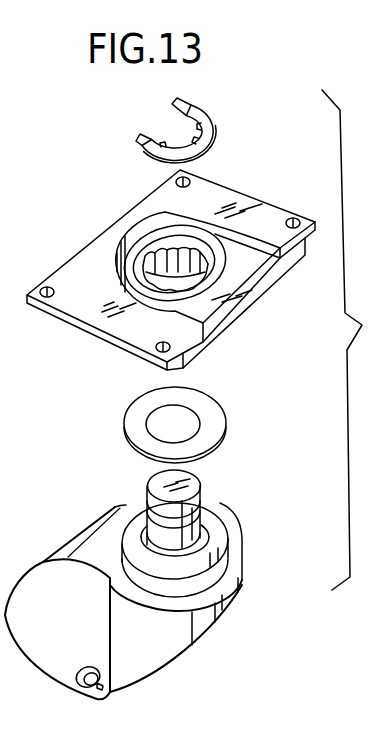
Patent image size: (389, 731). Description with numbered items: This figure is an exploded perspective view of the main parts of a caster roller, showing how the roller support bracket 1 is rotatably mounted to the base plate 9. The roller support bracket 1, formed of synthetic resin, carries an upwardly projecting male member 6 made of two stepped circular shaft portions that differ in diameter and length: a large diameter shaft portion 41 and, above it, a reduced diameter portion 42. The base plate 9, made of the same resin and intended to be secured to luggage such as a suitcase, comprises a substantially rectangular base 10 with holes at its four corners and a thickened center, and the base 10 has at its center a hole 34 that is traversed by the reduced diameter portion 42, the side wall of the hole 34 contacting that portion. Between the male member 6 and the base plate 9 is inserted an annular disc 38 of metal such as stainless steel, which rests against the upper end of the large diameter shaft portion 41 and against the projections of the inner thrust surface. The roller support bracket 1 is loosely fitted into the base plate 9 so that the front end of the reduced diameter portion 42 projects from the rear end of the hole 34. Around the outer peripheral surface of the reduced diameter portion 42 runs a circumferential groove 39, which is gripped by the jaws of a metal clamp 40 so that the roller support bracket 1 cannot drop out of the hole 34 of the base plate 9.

The roller support bracket 1 is at (166, 578).
The male member 6 is at (218, 561).
The base plate 9 is at (172, 255).
The base 10 is at (93, 303).
The hole 34 is at (205, 270).
The annular disc 38 is at (207, 412).
The circumferential groove 39 is at (145, 511).
The metal clamp 40 is at (190, 101).
The large diameter shaft portion 41 is at (167, 578).
The reduced diameter portion 42 is at (154, 504).